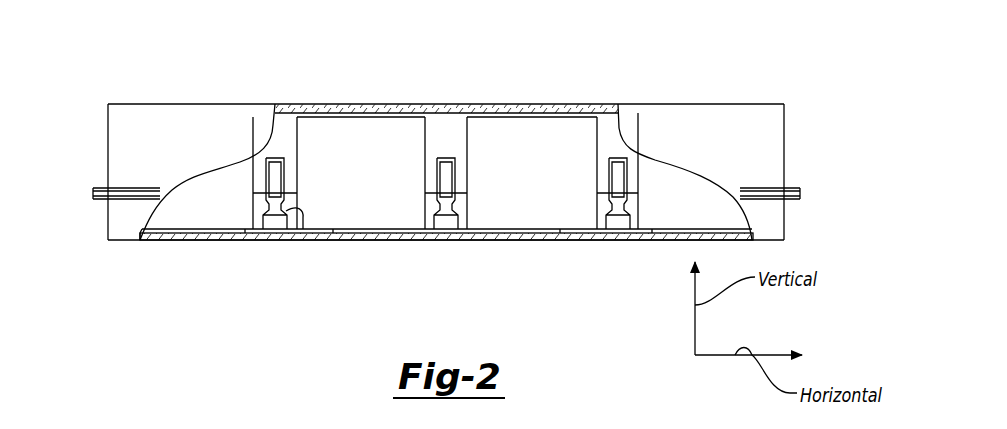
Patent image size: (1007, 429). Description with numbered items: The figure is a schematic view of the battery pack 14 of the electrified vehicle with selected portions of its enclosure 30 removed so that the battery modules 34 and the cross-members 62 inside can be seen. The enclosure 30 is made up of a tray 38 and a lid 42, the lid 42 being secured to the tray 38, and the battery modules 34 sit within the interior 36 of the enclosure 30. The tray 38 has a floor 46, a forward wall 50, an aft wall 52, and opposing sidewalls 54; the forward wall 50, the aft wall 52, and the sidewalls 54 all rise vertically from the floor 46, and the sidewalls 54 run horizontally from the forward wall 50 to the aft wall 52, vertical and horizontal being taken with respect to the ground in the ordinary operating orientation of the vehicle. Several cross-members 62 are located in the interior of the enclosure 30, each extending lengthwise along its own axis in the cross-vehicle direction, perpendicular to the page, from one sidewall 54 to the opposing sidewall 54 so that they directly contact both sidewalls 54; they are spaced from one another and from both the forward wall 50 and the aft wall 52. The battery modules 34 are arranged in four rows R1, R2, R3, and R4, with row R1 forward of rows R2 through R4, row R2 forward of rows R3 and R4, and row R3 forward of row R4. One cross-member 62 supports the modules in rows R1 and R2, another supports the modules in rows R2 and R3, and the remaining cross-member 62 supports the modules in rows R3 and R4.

The battery pack 14 is at (765, 68).
The enclosure 30 is at (784, 143).
The battery modules 34 is at (404, 117).
The interior 36 is at (452, 123).
The tray 38 is at (107, 215).
The lid 42 is at (107, 143).
The floor 46 is at (170, 242).
The forward wall 50 is at (108, 228).
The aft wall 52 is at (784, 215).
The opposing sidewalls 54 is at (123, 232).
The cross-members 62 is at (301, 240).
The first row R1 is at (203, 203).
The second row R2 is at (368, 200).
The third row R3 is at (533, 190).
The fourth row R4 is at (690, 202).